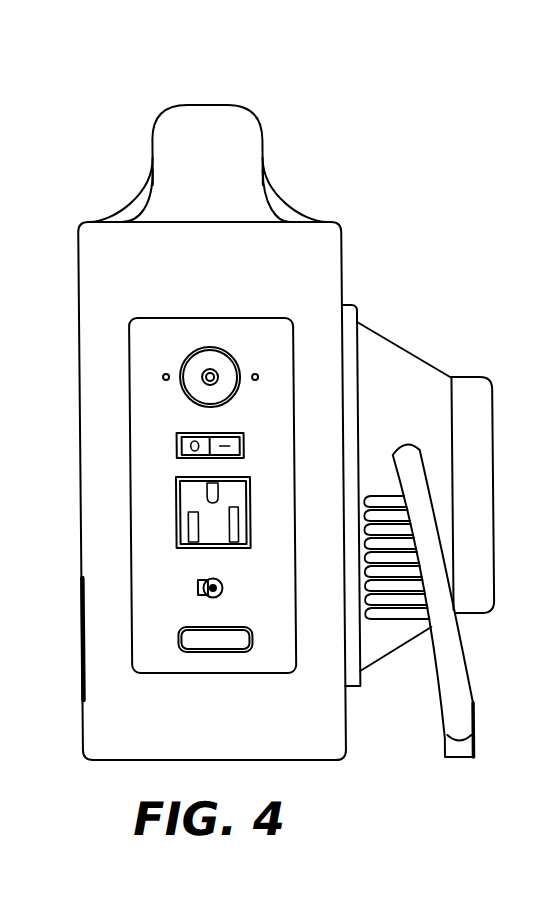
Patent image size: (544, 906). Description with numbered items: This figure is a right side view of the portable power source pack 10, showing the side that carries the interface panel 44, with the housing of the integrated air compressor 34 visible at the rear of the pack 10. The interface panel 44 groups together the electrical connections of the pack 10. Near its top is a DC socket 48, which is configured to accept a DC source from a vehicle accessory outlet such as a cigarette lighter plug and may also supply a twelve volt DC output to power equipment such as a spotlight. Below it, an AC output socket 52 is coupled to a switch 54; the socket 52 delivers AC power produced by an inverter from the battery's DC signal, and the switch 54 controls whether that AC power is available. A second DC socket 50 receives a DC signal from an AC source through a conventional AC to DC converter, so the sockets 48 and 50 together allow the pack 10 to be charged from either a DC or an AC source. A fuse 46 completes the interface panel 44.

The pack 10 is at (353, 85).
The air compressor 34 is at (420, 327).
The interface panel 44 is at (144, 335).
The DC socket 48 is at (193, 371).
The switch 54 is at (189, 454).
The AC output socket 52 is at (190, 493).
The DC socket 50 is at (203, 595).
The fuse 46 is at (186, 641).